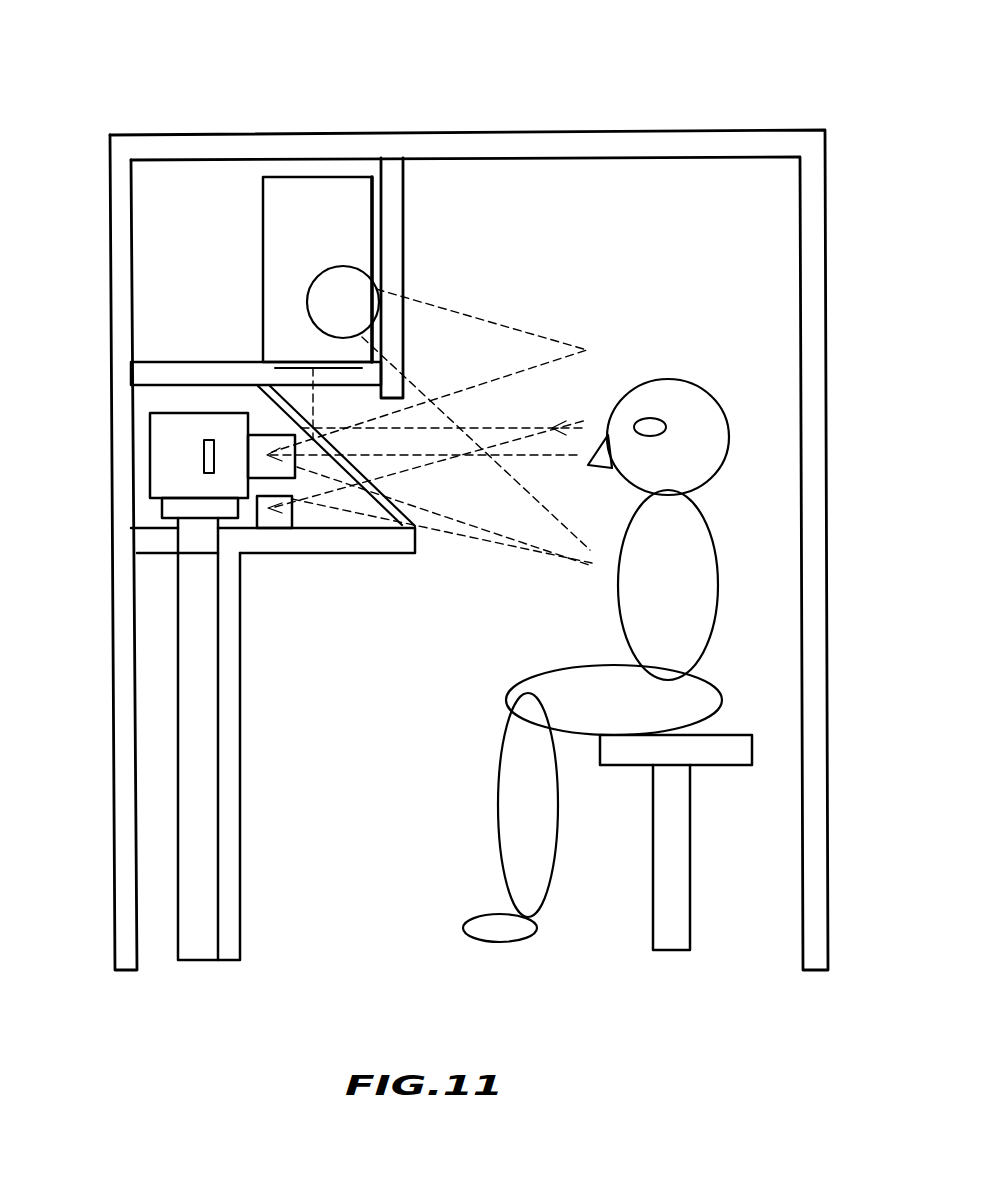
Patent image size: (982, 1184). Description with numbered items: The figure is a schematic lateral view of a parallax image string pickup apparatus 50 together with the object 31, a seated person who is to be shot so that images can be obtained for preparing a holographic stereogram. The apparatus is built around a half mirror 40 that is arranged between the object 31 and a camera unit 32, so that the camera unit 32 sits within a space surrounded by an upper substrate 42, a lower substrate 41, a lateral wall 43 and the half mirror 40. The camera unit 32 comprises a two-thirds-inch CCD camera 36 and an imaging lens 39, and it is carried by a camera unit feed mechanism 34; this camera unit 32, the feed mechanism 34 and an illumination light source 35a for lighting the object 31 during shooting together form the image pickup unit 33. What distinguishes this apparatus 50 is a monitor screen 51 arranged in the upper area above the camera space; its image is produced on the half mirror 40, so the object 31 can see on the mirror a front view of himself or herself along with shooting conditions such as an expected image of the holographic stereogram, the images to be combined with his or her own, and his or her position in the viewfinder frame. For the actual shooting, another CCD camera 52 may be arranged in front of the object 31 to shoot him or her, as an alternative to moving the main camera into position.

The parallax image string pickup apparatus 50 is at (507, 112).
The lateral wall 43 is at (125, 403).
The monitor screen 51 is at (348, 213).
The illumination light source 35a is at (362, 277).
The upper substrate 42 is at (152, 368).
The camera unit 32 is at (164, 409).
The CCD camera 36 is at (182, 427).
The imaging lens 39 is at (260, 442).
The camera unit feed mechanism 34 is at (205, 512).
The lower substrate 41 is at (157, 543).
The CCD camera 52 is at (275, 520).
The half mirror 40 is at (390, 513).
The image pickup unit 33 is at (436, 571).
The object 31 is at (697, 545).